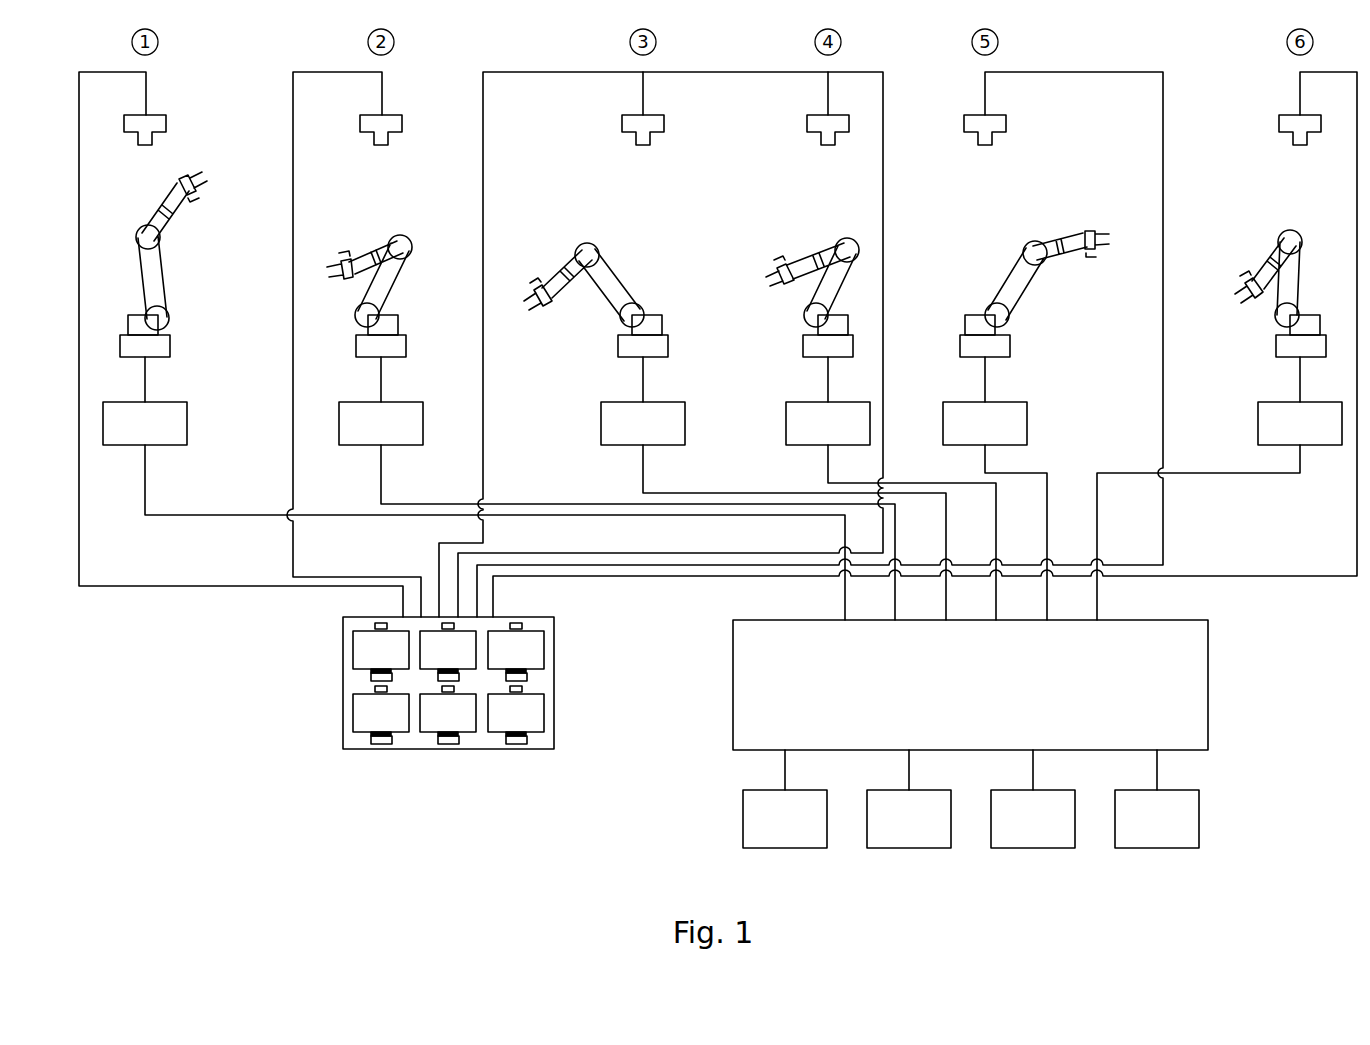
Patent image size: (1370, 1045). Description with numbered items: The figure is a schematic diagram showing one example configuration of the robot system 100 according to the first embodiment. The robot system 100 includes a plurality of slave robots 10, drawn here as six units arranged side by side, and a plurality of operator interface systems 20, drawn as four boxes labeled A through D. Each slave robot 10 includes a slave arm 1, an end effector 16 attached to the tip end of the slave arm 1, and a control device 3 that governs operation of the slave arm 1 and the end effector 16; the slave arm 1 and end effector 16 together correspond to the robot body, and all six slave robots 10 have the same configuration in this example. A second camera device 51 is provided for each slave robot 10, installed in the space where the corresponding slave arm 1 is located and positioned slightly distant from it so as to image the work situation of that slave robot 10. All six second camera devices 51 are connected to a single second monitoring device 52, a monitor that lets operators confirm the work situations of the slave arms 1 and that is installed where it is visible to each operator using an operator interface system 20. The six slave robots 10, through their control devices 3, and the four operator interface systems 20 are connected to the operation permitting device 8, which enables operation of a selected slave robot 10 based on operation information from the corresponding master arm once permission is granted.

The robot system 100 is at (234, 800).
The slave robot 10 is at (209, 290).
The slave arm 1 is at (172, 270).
The end effector 16 is at (232, 186).
The control device 3 is at (188, 421).
The second camera device 51 is at (167, 124).
The second monitoring device 52 is at (343, 686).
The operation permitting device 8 is at (1210, 672).
The operator interface system 20 is at (785, 848).